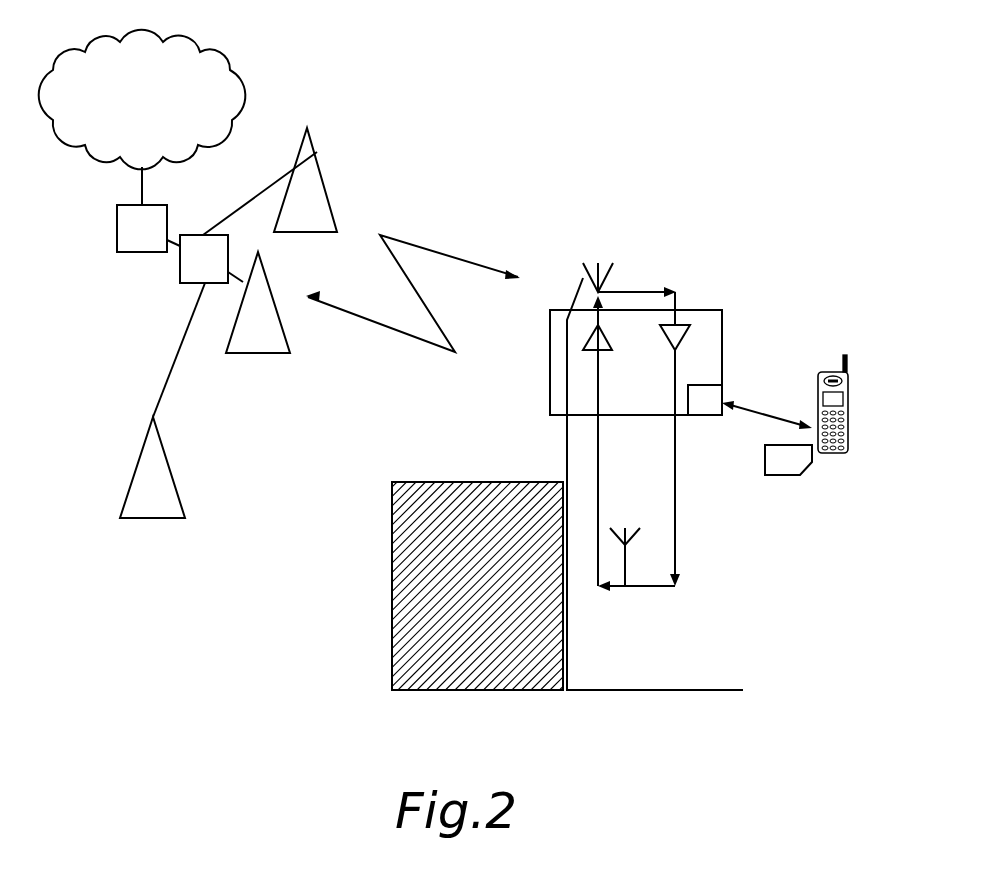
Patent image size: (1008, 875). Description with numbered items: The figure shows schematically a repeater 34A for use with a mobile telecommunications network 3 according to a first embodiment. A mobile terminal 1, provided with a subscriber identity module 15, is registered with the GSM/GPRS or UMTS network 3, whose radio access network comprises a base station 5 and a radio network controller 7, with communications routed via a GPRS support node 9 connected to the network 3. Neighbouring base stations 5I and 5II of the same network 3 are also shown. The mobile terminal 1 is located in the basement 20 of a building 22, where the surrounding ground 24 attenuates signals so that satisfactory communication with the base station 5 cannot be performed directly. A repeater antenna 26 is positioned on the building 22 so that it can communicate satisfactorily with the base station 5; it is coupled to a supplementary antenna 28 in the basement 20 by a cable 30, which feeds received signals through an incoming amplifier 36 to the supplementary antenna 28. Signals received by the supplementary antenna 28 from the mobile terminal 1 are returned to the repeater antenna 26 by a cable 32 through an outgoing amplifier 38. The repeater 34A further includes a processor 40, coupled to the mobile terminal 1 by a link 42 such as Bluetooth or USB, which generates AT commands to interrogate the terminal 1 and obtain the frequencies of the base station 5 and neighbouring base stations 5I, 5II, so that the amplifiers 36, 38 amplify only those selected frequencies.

The mobile terminal 1 is at (850, 420).
The mobile telecommunications network 3 is at (220, 52).
The base station 5 is at (282, 317).
The neighbouring base station 5I is at (316, 152).
The neighbouring base station 5II is at (172, 468).
The radio network controller 7 is at (180, 281).
The GPRS support node 9 is at (117, 232).
The subscriber identity module 15 is at (776, 462).
The basement 20 is at (640, 643).
The building 22 is at (567, 432).
The ground 24 is at (418, 603).
The repeater antenna 26 is at (603, 280).
The supplementary antenna 28 is at (625, 565).
The cable 30 is at (677, 503).
The cable 32 is at (600, 443).
The repeater 34A is at (723, 348).
The incoming amplifier 36 is at (680, 322).
The outgoing amplifier 38 is at (605, 350).
The processor 40 is at (705, 415).
The link 42 is at (765, 413).